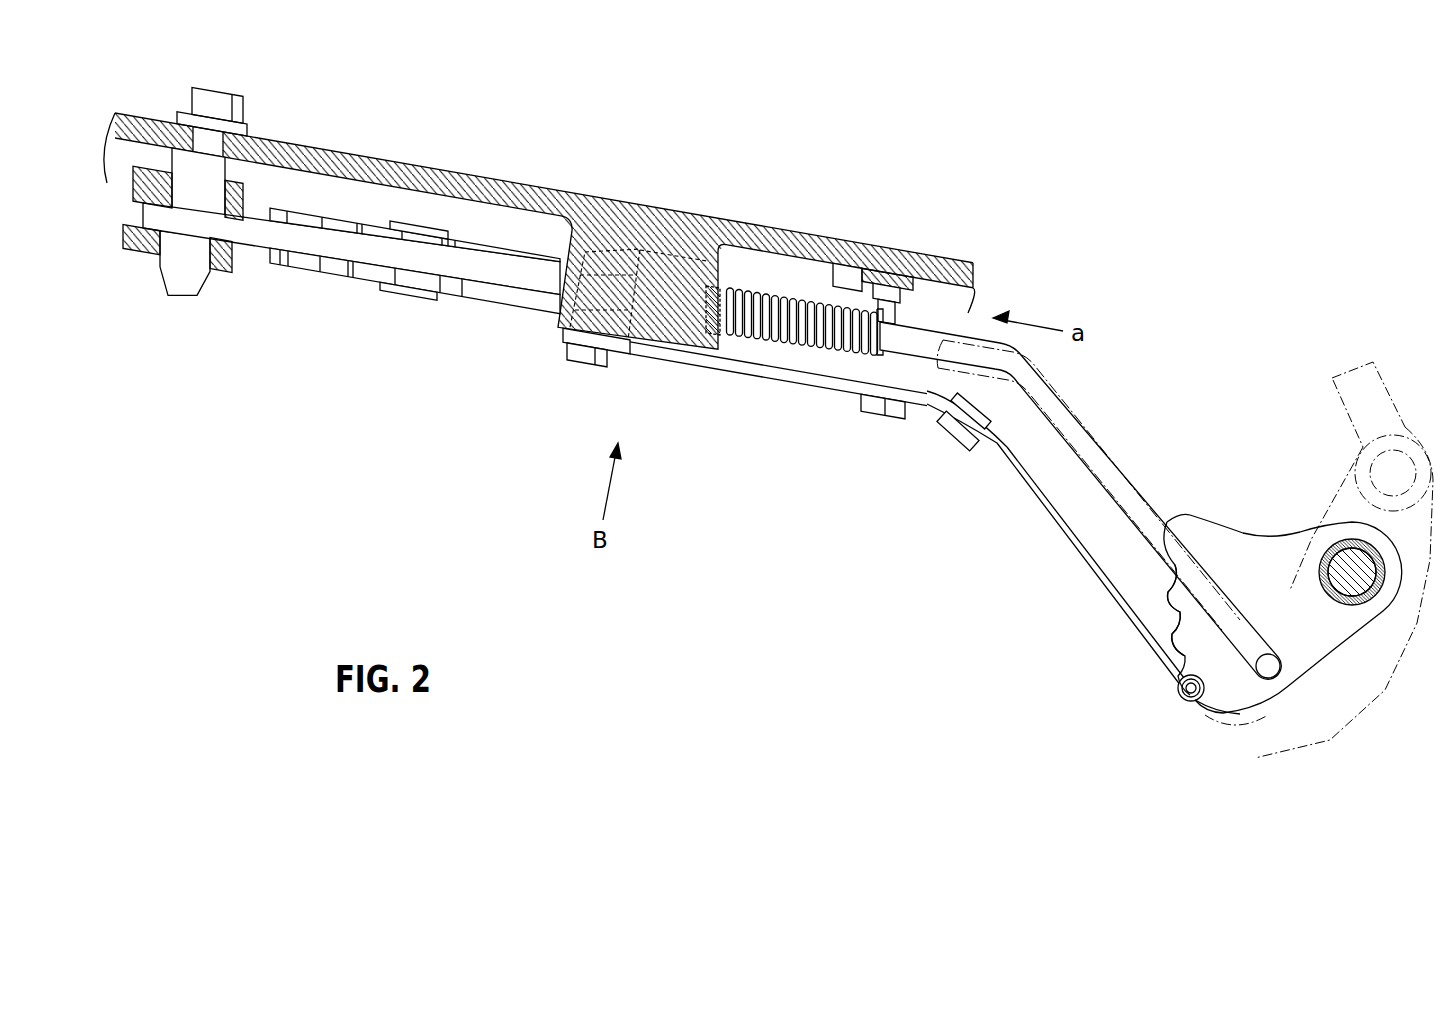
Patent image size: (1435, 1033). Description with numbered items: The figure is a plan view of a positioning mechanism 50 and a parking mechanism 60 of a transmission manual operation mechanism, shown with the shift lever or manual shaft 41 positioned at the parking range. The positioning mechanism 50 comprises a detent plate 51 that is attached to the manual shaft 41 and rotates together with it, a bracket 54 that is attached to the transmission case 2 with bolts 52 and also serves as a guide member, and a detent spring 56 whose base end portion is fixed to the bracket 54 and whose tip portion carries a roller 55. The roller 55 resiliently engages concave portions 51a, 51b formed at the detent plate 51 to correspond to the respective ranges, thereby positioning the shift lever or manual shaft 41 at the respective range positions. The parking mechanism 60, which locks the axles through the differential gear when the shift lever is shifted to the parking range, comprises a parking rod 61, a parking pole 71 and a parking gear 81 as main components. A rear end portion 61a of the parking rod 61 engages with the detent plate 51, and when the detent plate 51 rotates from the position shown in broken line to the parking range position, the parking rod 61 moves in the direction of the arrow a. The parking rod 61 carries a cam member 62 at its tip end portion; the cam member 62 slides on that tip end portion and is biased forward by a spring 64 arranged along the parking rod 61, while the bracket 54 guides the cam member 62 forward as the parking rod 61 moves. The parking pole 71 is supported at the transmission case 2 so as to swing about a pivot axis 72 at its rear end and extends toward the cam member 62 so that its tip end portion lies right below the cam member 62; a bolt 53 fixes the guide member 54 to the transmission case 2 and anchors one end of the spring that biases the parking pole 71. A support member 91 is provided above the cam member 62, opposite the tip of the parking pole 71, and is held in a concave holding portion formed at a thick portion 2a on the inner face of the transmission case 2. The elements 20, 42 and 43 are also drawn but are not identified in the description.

The transmission case 2 is at (432, 175).
The thick portion 2a is at (573, 237).
The cam member 62 is at (650, 250).
The spring 64 is at (797, 297).
The pivot axis 72 is at (185, 258).
The parking gear 81 is at (318, 275).
The lower strip 20 is at (395, 300).
The parking pole 71 is at (465, 272).
The parking mechanism 60 is at (533, 325).
The bolts 52 is at (578, 368).
The support member 91 is at (728, 345).
The bracket 54 is at (778, 378).
The bolt 53 is at (860, 413).
The parking rod 61 is at (1087, 443).
The rear end portion 61a is at (1272, 680).
The arm 43 is at (1333, 397).
The bracket 42 is at (1327, 490).
The detent plate 51 is at (1232, 525).
The concave portion 51a is at (1215, 705).
The concave portion 51b is at (1175, 620).
The detent spring 56 is at (1066, 527).
The roller 55 is at (1188, 700).
The positioning mechanism 50 is at (1147, 672).
The manual shaft 41 is at (1363, 593).